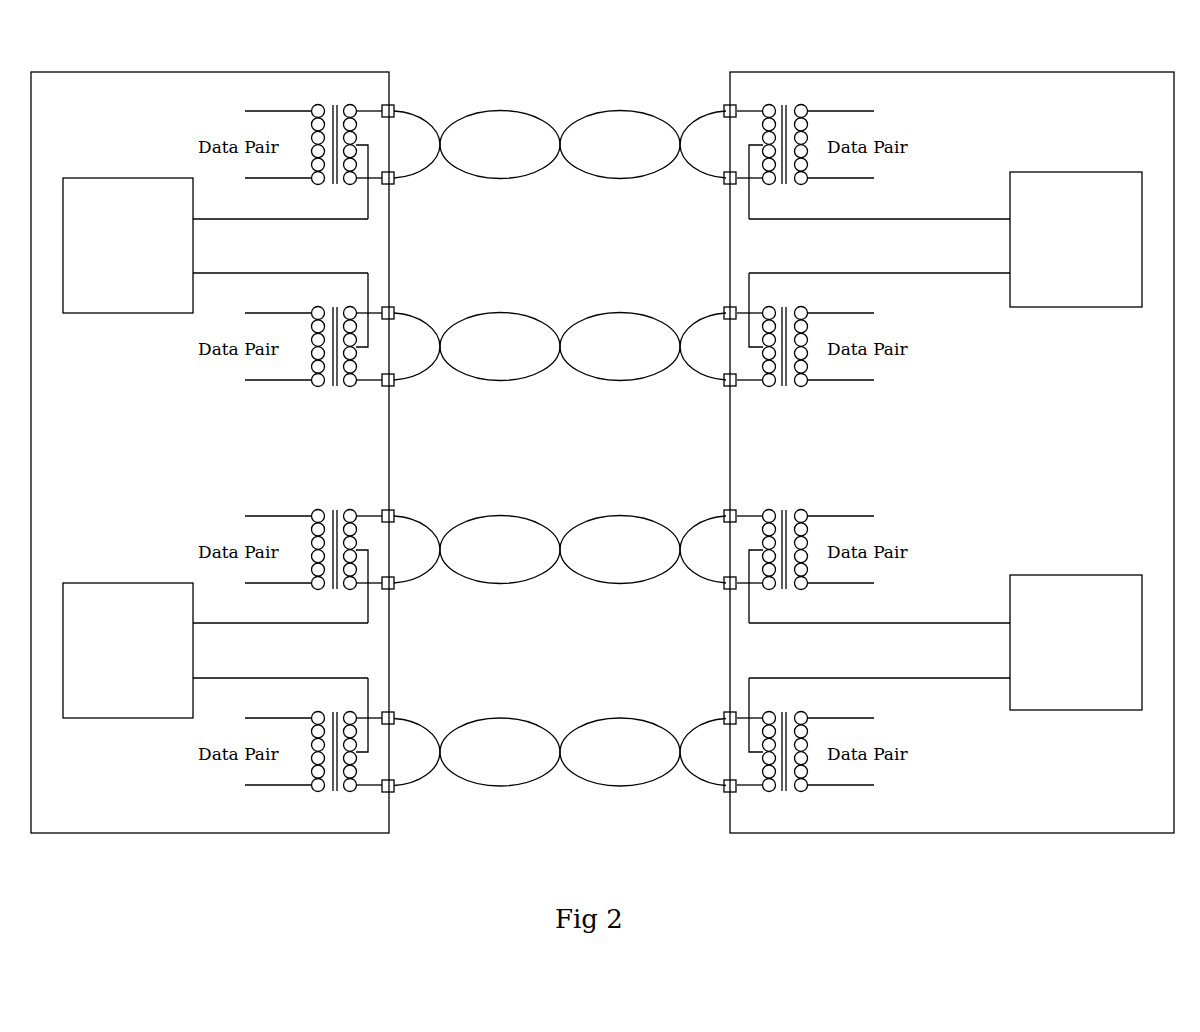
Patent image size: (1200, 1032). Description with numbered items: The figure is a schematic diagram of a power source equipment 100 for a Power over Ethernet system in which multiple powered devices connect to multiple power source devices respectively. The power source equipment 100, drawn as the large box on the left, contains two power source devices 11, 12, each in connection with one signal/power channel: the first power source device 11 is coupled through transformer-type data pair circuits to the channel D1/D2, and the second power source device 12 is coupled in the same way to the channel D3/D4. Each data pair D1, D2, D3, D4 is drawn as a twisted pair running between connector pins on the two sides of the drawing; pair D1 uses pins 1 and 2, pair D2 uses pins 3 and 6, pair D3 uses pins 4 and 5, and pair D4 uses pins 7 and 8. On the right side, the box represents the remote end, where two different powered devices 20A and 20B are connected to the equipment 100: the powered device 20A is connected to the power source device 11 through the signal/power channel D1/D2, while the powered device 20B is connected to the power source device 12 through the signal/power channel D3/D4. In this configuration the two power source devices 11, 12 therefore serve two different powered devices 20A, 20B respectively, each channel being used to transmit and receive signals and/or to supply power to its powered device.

The power source equipment 100 is at (100, 72).
The power source device 11 is at (215, 245).
The power source device 12 is at (215, 650).
The powered device 20A is at (945, 239).
The powered device 20B is at (945, 642).
The connector pin 1 is at (559, 103).
The connector pin 2 is at (559, 188).
The connector pin 3 is at (559, 304).
The connector pin 4 is at (559, 507).
The connector pin 5 is at (559, 593).
The connector pin 6 is at (559, 391).
The connector pin 7 is at (559, 709).
The connector pin 8 is at (559, 797).
The signal/power channel D1 is at (560, 165).
The signal/power channel D2 is at (560, 365).
The signal/power channel D3 is at (560, 567).
The signal/power channel D4 is at (560, 770).